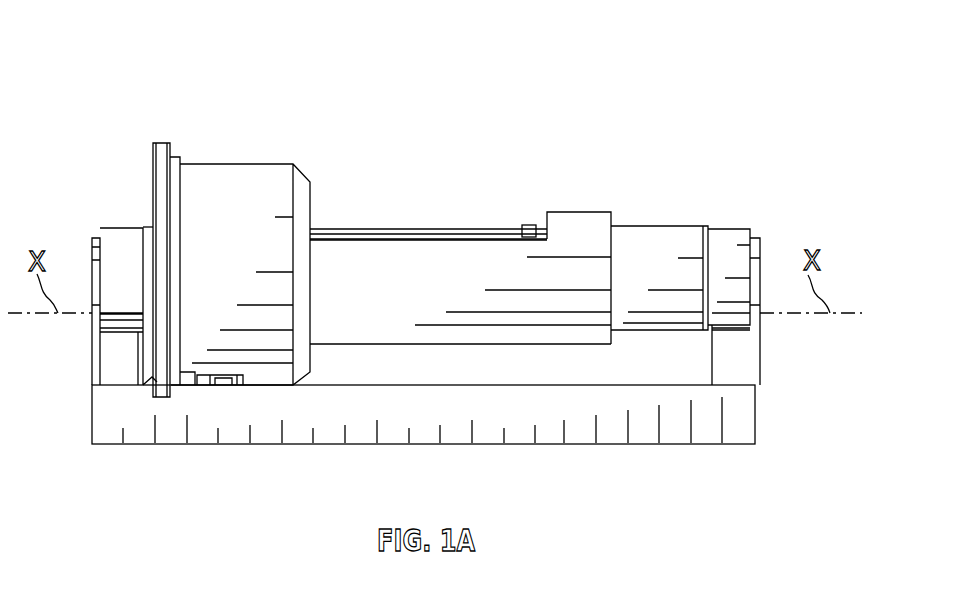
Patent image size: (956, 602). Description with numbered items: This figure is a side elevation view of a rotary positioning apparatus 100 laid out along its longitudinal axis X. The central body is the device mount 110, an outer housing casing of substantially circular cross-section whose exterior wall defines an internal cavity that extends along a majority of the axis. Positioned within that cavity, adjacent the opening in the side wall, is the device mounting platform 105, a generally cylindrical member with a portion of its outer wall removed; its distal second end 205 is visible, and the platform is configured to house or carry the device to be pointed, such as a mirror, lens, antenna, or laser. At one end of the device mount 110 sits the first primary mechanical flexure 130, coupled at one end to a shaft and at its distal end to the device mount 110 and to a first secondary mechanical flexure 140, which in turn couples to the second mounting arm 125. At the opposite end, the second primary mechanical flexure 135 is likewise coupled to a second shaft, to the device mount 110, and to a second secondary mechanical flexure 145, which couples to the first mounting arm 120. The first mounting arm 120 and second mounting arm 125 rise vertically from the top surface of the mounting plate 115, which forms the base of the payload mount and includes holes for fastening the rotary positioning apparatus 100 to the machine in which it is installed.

The rotary positioning apparatus 100 is at (180, 40).
The device mounting platform 105 is at (365, 182).
The device mount 110 is at (273, 192).
The mounting plate 115 is at (737, 417).
The first mounting arm 120 is at (760, 350).
The second mounting arm 125 is at (90, 364).
The first primary mechanical flexure 130 is at (150, 228).
The second primary mechanical flexure 135 is at (623, 212).
The first secondary mechanical flexure 140 is at (114, 240).
The second secondary mechanical flexure 145 is at (738, 235).
The second end 205 is at (530, 224).